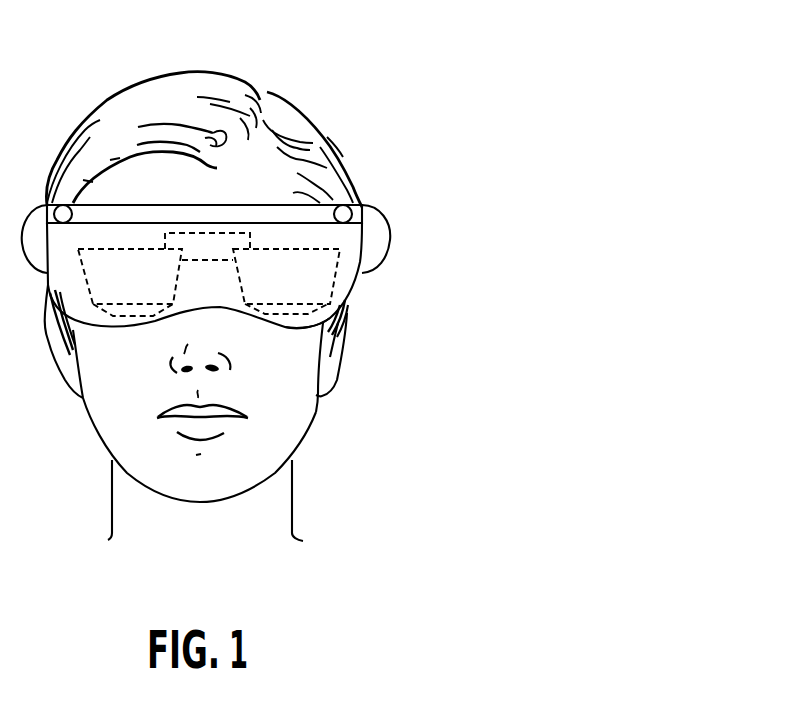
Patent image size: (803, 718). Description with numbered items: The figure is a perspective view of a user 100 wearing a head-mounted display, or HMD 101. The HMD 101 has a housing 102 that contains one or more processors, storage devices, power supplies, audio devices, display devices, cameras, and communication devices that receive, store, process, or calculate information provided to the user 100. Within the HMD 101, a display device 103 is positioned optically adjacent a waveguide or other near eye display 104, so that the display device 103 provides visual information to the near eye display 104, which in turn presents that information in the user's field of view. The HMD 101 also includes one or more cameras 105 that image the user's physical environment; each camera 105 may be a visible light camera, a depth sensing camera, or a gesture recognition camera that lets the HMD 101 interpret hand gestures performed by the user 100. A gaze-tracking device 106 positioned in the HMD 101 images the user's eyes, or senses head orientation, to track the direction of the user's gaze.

The user 100 is at (366, 70).
The HMD 101 is at (255, 218).
The housing 102 is at (390, 187).
The display device 103 is at (363, 229).
The near eye display 104 is at (330, 278).
The camera 105 is at (356, 216).
The gaze-tracking device 106 is at (345, 332).